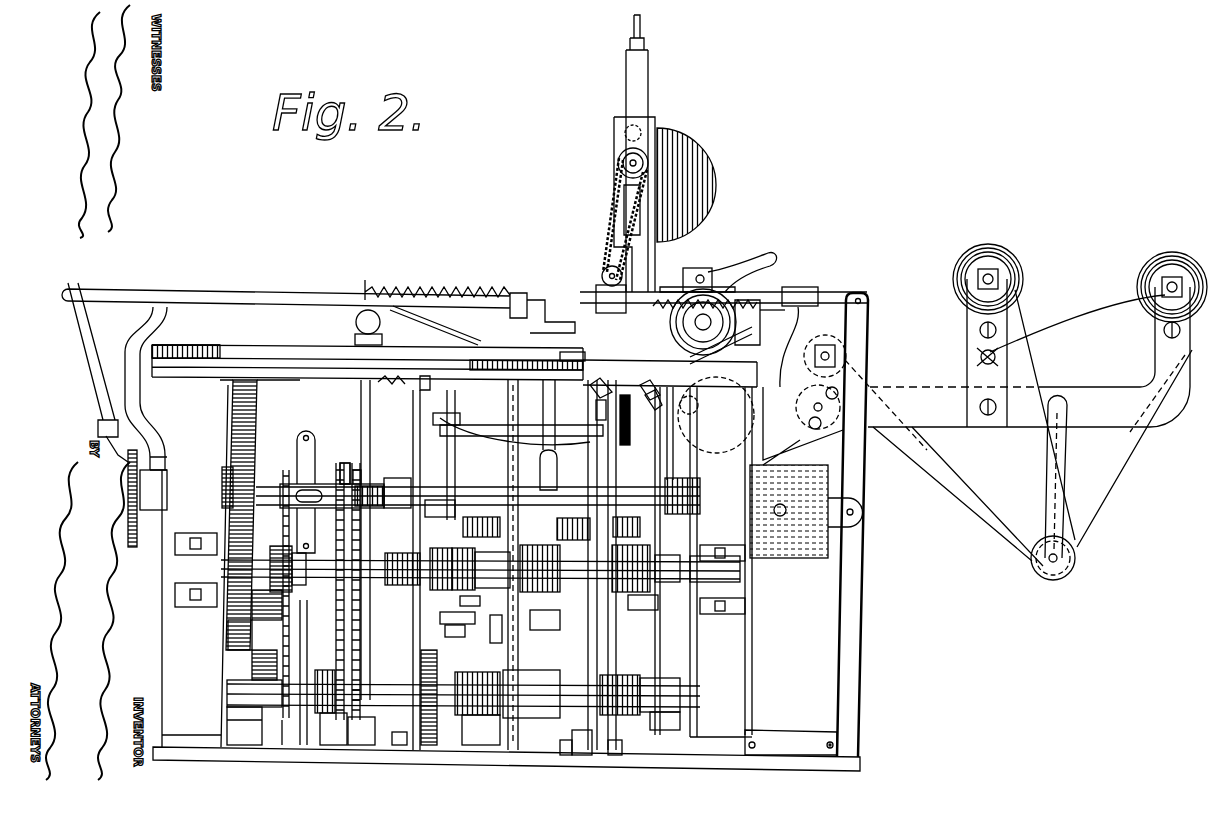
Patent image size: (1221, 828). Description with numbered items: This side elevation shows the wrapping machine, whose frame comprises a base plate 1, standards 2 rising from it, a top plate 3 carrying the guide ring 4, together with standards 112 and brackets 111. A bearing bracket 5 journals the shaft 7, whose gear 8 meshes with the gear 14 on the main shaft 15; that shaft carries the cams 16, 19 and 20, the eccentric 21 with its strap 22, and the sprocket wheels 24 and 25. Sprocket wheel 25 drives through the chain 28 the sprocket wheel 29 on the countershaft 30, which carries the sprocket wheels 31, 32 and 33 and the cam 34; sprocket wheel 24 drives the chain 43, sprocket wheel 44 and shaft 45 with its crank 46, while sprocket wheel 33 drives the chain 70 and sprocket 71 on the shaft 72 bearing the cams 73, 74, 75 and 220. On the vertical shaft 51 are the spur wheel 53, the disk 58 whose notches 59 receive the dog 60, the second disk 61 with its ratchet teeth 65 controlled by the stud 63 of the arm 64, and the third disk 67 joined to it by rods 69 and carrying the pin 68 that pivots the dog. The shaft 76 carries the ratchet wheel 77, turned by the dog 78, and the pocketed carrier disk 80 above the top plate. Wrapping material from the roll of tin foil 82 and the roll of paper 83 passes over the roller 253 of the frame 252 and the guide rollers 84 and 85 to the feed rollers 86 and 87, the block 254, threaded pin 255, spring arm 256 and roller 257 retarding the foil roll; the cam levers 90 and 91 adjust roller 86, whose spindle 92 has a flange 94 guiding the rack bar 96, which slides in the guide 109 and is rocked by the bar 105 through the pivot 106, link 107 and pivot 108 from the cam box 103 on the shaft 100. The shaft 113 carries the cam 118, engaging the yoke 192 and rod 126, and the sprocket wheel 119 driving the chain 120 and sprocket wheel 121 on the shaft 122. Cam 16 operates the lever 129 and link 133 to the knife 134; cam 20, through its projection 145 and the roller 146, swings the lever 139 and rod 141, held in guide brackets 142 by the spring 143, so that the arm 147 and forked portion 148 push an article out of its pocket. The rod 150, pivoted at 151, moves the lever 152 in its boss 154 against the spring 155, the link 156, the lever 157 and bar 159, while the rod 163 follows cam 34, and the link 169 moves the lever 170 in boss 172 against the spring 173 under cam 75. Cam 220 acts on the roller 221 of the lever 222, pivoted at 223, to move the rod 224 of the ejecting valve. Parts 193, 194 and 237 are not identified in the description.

The base plate 1 is at (230, 750).
The frame 2 is at (165, 427).
The frame top 3 is at (280, 370).
The rack 4 is at (232, 348).
The gear 5 is at (262, 650).
The bracket 7 is at (215, 610).
The bearing 8 is at (228, 637).
The large gear 14 is at (256, 410).
The shaft 15 is at (270, 485).
The gear 16 is at (700, 490).
The rod 19 is at (413, 490).
The gear 20 is at (140, 508).
The collar 21 is at (308, 560).
The link 22 is at (303, 440).
The rod 24 is at (363, 470).
The stud 25 is at (345, 463).
The bearing 28 is at (284, 610).
The bracket 29 is at (352, 745).
The lower shaft 30 is at (305, 685).
The gear 31 is at (645, 700).
The gear 32 is at (432, 745).
The bracket 33 is at (282, 745).
The hub 34 is at (481, 730).
The chain 43 is at (362, 640).
The chain 44 is at (362, 668).
The gear 45 is at (466, 672).
The sprocket 46 is at (335, 700).
The plunger 51 is at (557, 470).
The slide 53 is at (455, 609).
The drum 58 is at (520, 718).
The bracket 59 is at (540, 718).
The gear 60 is at (640, 665).
The rod 61 is at (500, 500).
The gear 63 is at (464, 563).
The gear 64 is at (441, 563).
The collar 65 is at (495, 562).
The arm 67 is at (458, 632).
The lever 68 is at (562, 640).
The stud 69 is at (466, 593).
The drum 70 is at (262, 680).
The gear 71 is at (280, 546).
The shaft 72 is at (305, 577).
The gear 73 is at (402, 560).
The gear 74 is at (540, 564).
The gear 75 is at (631, 565).
The spring 76 is at (357, 470).
The block 77 is at (400, 508).
The carriage 78 is at (315, 484).
The plate 80 is at (300, 345).
The pulley 82 is at (1172, 255).
The pulley 83 is at (990, 248).
The wheel 84 is at (800, 418).
The wheel 85 is at (826, 336).
The ratchet 86 is at (722, 320).
The disk 87 is at (690, 440).
The arm 90 is at (744, 347).
The pawl 91 is at (745, 265).
The wheel 92 is at (703, 322).
The lever 94 is at (752, 300).
The lever 96 is at (768, 308).
The plate 100 is at (780, 516).
The tab 103 is at (822, 553).
The column 105 is at (855, 580).
The bolt 106 is at (838, 742).
The foot 107 is at (791, 744).
The bolt 108 is at (748, 742).
The rail 109 is at (600, 295).
The arm 111 is at (1085, 400).
The rod 112 is at (648, 97).
The pulley hub 113 is at (624, 168).
The disk 118 is at (700, 165).
The pulley 119 is at (618, 163).
The belt 120 is at (608, 205).
The bar 121 is at (642, 290).
The sprocket 122 is at (603, 272).
The belt 126 is at (605, 245).
The bracket 129 is at (700, 540).
The plate 133 is at (795, 460).
The wheel rim 134 is at (703, 327).
The lever 139 is at (92, 352).
The bar 141 is at (255, 300).
The lever 142 is at (155, 290).
The spring 143 is at (430, 290).
The bearing 145 is at (167, 485).
The bracket 146 is at (160, 458).
The knob 147 is at (418, 325).
The bracket 148 is at (522, 322).
The chain 150 is at (348, 620).
The bracket 151 is at (391, 758).
The rod 152 is at (433, 448).
The block 154 is at (440, 376).
The spring 155 is at (396, 375).
The block 156 is at (465, 405).
The bar 157 is at (465, 436).
The link 159 is at (500, 430).
The arm 163 is at (510, 620).
The block 169 is at (606, 420).
The block 170 is at (626, 430).
The pawl 172 is at (620, 384).
The pawl 173 is at (660, 405).
The bracket 192 is at (620, 130).
The rod 193 is at (616, 625).
The bracket 194 is at (618, 755).
The gear 220 is at (551, 527).
The arm 221 is at (632, 610).
The arm 222 is at (673, 691).
The bracket 223 is at (588, 766).
The block 224 is at (566, 344).
The collar 237 is at (661, 560).
The lever 252 is at (1050, 488).
The pulley 253 is at (1040, 572).
The cord 254 is at (1071, 330).
The sprocket 255 is at (283, 645).
The chain 256 is at (360, 612).
The cord 257 is at (1150, 318).